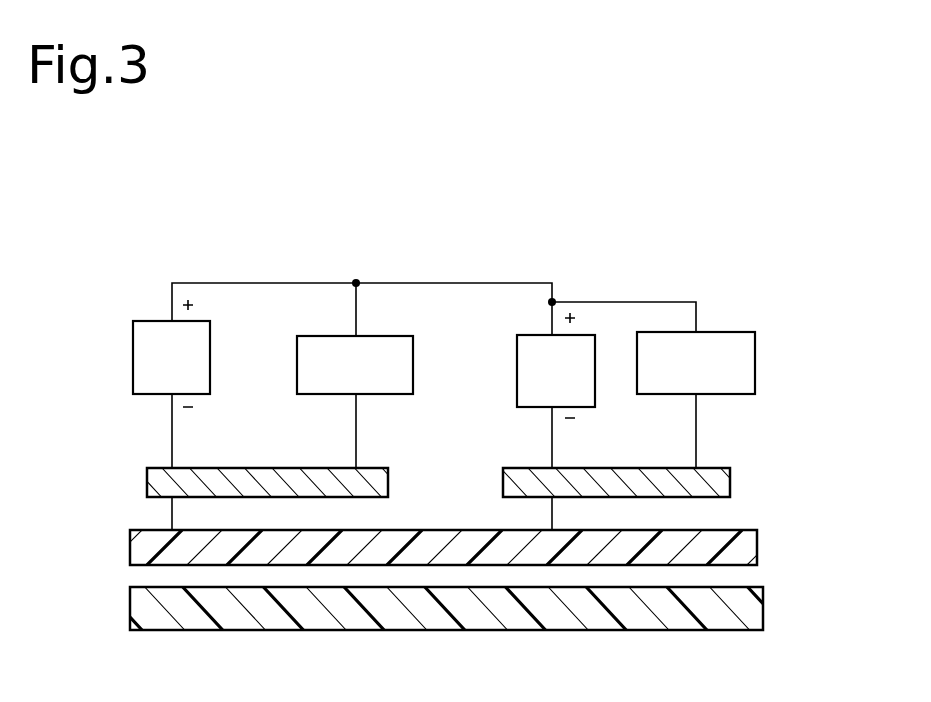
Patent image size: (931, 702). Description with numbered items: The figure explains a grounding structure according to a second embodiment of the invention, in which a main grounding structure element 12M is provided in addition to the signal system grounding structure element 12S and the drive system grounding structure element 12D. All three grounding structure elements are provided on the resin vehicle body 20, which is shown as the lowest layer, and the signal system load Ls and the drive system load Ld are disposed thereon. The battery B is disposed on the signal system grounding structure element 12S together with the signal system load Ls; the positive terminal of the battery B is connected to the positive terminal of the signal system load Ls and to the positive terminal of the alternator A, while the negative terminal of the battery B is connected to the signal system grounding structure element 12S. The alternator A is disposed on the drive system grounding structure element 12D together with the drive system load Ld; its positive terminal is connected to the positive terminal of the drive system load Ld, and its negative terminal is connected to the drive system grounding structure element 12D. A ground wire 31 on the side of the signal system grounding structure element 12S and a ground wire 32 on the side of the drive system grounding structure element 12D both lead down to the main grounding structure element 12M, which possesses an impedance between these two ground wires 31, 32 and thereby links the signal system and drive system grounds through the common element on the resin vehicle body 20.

The battery B is at (146, 321).
The signal system load Ls is at (387, 336).
The alternator A is at (533, 335).
The drive system load Ld is at (711, 332).
The signal system grounding structure element 12S is at (370, 468).
The drive system grounding structure element 12D is at (703, 468).
The ground wire 31 is at (194, 513).
The ground wire 32 is at (574, 513).
The main grounding structure element 12M is at (760, 538).
The resin vehicle body 20 is at (760, 610).